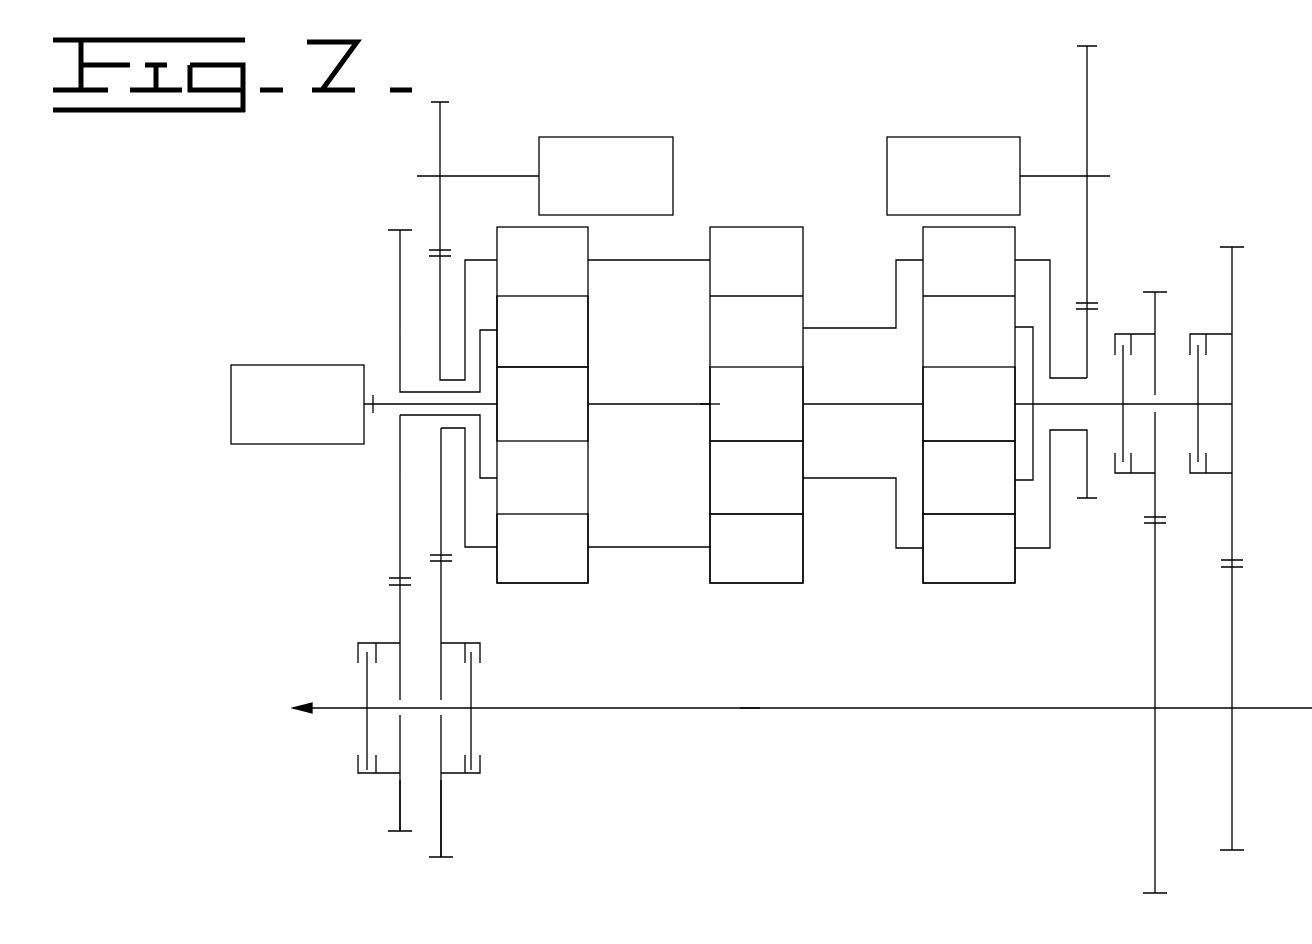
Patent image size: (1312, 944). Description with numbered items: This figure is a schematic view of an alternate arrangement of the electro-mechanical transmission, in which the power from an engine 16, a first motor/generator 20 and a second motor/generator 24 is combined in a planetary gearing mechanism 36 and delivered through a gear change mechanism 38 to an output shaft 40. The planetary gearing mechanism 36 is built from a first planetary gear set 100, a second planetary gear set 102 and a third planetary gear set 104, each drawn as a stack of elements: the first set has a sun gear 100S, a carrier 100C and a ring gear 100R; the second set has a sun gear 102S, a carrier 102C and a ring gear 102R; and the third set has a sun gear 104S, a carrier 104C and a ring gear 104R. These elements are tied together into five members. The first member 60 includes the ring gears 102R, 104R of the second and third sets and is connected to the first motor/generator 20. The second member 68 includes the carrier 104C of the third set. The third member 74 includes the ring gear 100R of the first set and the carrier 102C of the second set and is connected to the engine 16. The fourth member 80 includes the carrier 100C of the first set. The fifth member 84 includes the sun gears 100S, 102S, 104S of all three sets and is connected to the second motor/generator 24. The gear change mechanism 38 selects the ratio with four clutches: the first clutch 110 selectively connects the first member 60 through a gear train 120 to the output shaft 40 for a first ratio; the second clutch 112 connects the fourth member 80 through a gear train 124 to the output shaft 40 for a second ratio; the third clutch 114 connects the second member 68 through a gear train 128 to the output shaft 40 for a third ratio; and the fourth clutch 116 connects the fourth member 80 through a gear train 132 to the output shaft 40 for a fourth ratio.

The engine 16 is at (933, 137).
The first motor/generator 20 is at (606, 137).
The second motor/generator 24 is at (306, 365).
The planetary gearing mechanism 36 is at (707, 648).
The gear change mechanism 38 is at (739, 760).
The output shaft 40 is at (825, 710).
The first member 60 is at (483, 260).
The second member 68 is at (440, 420).
The third member 74 is at (1040, 258).
The fourth member 80 is at (1081, 404).
The fifth member 84 is at (383, 400).
The first planetary gear set 100 is at (928, 448).
The sun gear 100S is at (922, 388).
The carrier 100C is at (922, 470).
The ring gear 100R is at (922, 575).
The second planetary gear set 102 is at (756, 448).
The sun gear 102S is at (708, 375).
The carrier 102C is at (708, 493).
The ring gear 102R is at (806, 548).
The third planetary gear set 104 is at (582, 447).
The sun gear 104S is at (590, 395).
The carrier 104C is at (590, 320).
The ring gear 104R is at (590, 537).
The first clutch 110 is at (478, 775).
The second clutch 112 is at (1122, 475).
The third clutch 114 is at (368, 774).
The fourth clutch 116 is at (1213, 474).
The gear train 120 is at (460, 833).
The gear train 124 is at (1122, 598).
The gear train 128 is at (370, 823).
The gear train 132 is at (1212, 610).